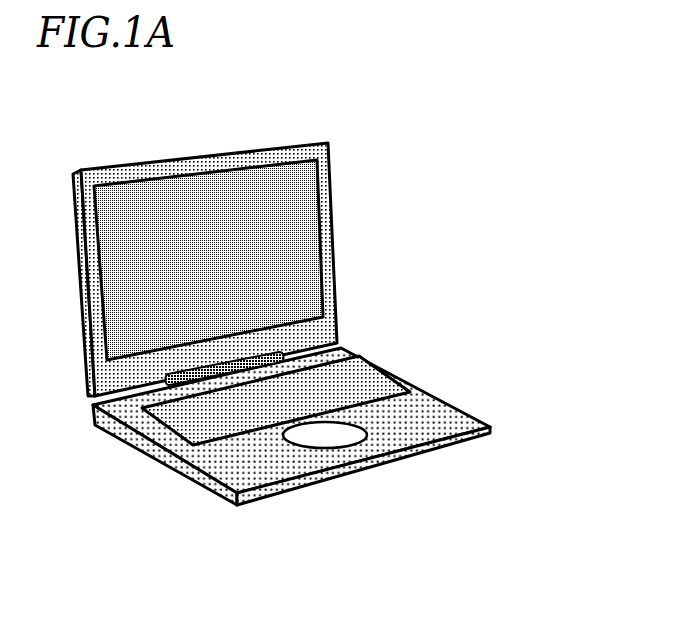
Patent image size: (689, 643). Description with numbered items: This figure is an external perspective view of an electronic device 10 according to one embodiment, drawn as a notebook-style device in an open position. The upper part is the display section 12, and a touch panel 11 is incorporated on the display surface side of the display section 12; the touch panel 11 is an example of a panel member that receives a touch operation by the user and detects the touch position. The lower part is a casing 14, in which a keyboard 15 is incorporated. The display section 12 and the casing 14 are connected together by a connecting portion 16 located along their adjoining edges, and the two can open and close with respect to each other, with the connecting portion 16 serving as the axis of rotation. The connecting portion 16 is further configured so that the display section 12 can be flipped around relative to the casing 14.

The electronic device 10 is at (516, 155).
The touch panel 11 is at (235, 210).
The display section 12 is at (155, 163).
The casing 14 is at (408, 423).
The keyboard 15 is at (357, 382).
The connecting portion 16 is at (277, 350).